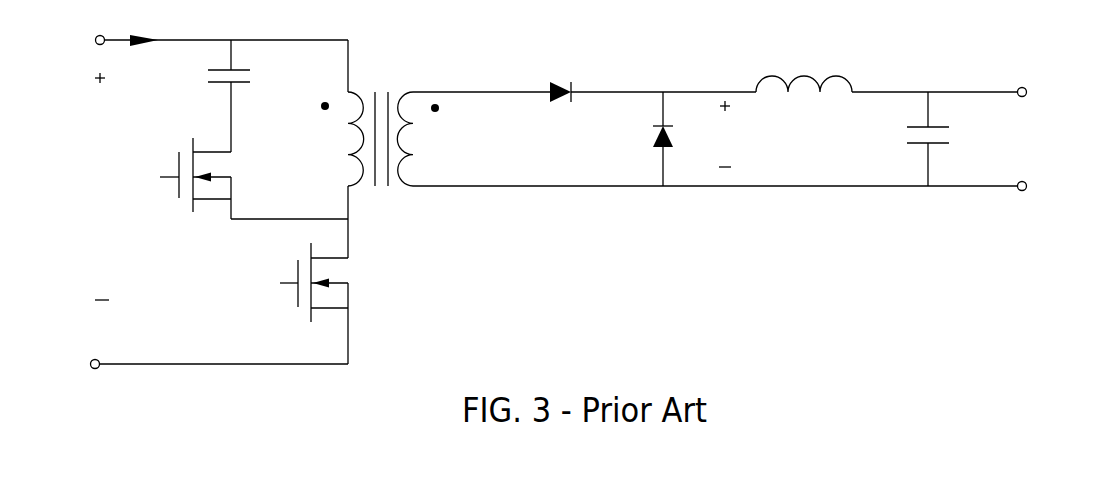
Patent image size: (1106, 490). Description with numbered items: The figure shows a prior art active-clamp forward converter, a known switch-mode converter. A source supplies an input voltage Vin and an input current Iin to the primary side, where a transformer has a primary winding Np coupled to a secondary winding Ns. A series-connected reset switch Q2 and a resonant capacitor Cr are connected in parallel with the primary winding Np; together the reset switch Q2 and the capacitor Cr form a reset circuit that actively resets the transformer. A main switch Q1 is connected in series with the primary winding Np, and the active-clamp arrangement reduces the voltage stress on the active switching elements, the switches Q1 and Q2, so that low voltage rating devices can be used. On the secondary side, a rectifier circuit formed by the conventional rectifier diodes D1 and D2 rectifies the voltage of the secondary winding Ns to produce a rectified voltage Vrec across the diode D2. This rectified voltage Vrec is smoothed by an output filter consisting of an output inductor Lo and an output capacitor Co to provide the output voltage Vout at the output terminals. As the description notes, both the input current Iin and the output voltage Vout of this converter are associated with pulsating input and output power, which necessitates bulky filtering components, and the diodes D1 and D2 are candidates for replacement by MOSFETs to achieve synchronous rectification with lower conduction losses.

The input voltage Vin is at (215, 202).
The input current Iin is at (144, 57).
The resonant capacitor Cr is at (246, 96).
The reset switch Q2 is at (253, 189).
The switch Q1 is at (304, 275).
The transformer primary winding Np is at (343, 113).
The transformer secondary winding Ns is at (707, 139).
The rectifier diode D1 is at (652, 73).
The rectifier diode D2 is at (635, 139).
The rectified voltage Vrec is at (728, 134).
The output inductor Lo is at (887, 67).
The output capacitor Co is at (903, 139).
The output voltage Vout is at (1038, 139).